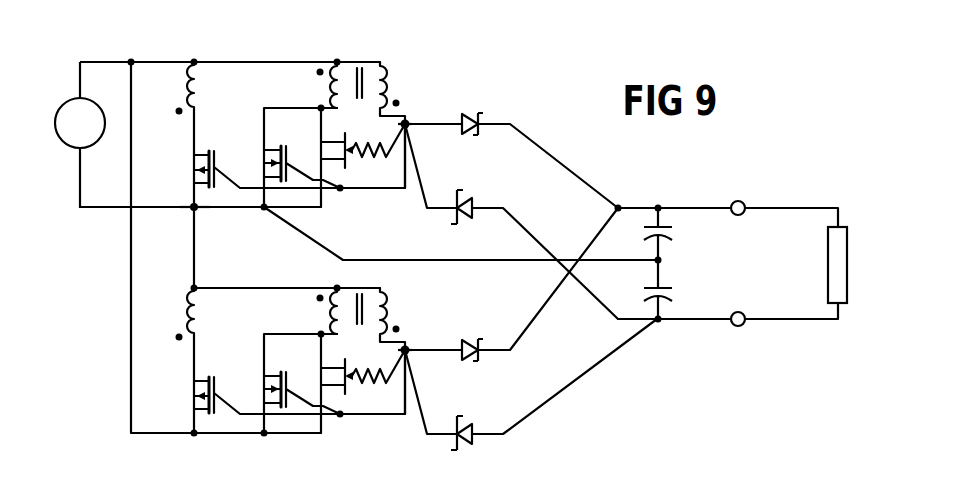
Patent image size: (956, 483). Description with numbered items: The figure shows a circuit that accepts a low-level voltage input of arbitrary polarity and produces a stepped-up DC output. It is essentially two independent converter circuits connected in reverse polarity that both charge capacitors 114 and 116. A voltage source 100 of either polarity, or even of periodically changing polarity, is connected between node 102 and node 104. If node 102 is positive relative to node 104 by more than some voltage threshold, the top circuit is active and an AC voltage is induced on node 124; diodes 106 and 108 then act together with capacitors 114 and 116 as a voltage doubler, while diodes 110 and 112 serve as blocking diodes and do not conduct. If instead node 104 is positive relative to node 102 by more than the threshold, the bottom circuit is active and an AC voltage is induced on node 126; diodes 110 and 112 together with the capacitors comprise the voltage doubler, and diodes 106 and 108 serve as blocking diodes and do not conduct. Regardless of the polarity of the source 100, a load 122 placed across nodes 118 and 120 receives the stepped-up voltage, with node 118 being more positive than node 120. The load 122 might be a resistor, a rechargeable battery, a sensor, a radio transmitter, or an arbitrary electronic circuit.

The voltage source 100 is at (64, 146).
The node 102 is at (129, 59).
The node 104 is at (192, 210).
The diode 106 is at (469, 112).
The diode 108 is at (478, 200).
The diode 110 is at (472, 340).
The diode 112 is at (467, 420).
The capacitor 114 is at (673, 233).
The capacitor 116 is at (674, 294).
The node 118 is at (731, 202).
The node 120 is at (731, 327).
The load 122 is at (852, 261).
The node 124 is at (412, 118).
The node 126 is at (411, 346).